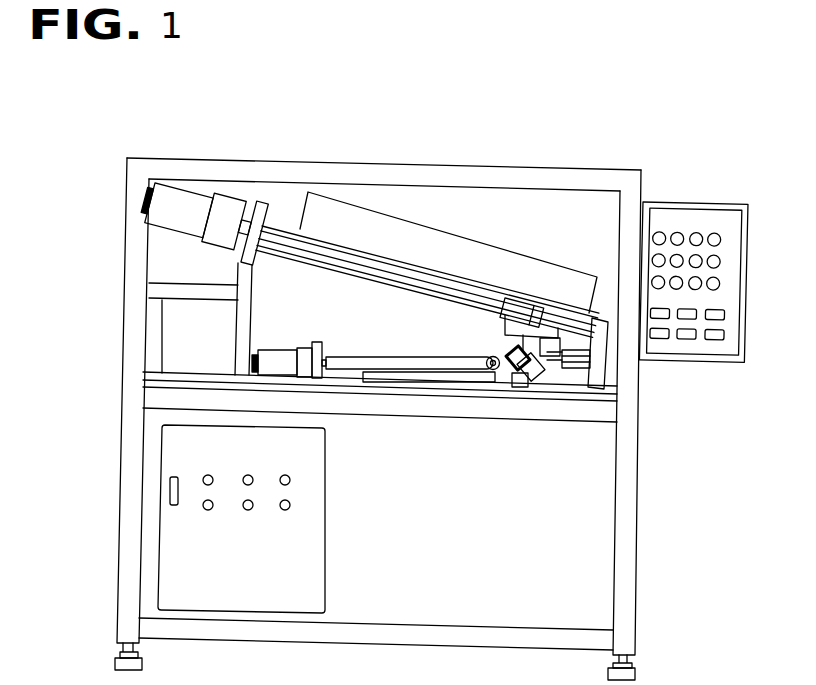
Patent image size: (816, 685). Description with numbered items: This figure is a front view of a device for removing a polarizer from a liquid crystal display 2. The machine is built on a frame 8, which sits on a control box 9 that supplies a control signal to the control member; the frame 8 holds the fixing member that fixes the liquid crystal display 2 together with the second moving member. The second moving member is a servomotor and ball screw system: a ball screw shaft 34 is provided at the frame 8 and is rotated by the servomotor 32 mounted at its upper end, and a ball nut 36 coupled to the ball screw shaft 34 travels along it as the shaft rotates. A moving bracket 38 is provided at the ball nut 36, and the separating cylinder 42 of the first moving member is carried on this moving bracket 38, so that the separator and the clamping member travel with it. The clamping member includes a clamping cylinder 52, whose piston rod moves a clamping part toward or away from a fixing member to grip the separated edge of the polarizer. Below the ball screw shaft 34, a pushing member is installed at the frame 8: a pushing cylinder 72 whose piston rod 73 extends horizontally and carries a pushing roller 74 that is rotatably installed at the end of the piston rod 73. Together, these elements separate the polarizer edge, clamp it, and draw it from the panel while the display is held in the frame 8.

The liquid crystal display 2 is at (412, 378).
The frame 8 is at (630, 432).
The control box 9 is at (185, 552).
The servomotor 32 is at (178, 202).
The ball screw shaft 34 is at (275, 237).
The ball nut 36 is at (508, 310).
The moving bracket 38 is at (503, 325).
The separating cylinder 42 is at (577, 368).
The clamping cylinder 52 is at (513, 387).
The pushing cylinder 72 is at (270, 355).
The piston rod 73 is at (327, 362).
The pushing roller 74 is at (493, 373).